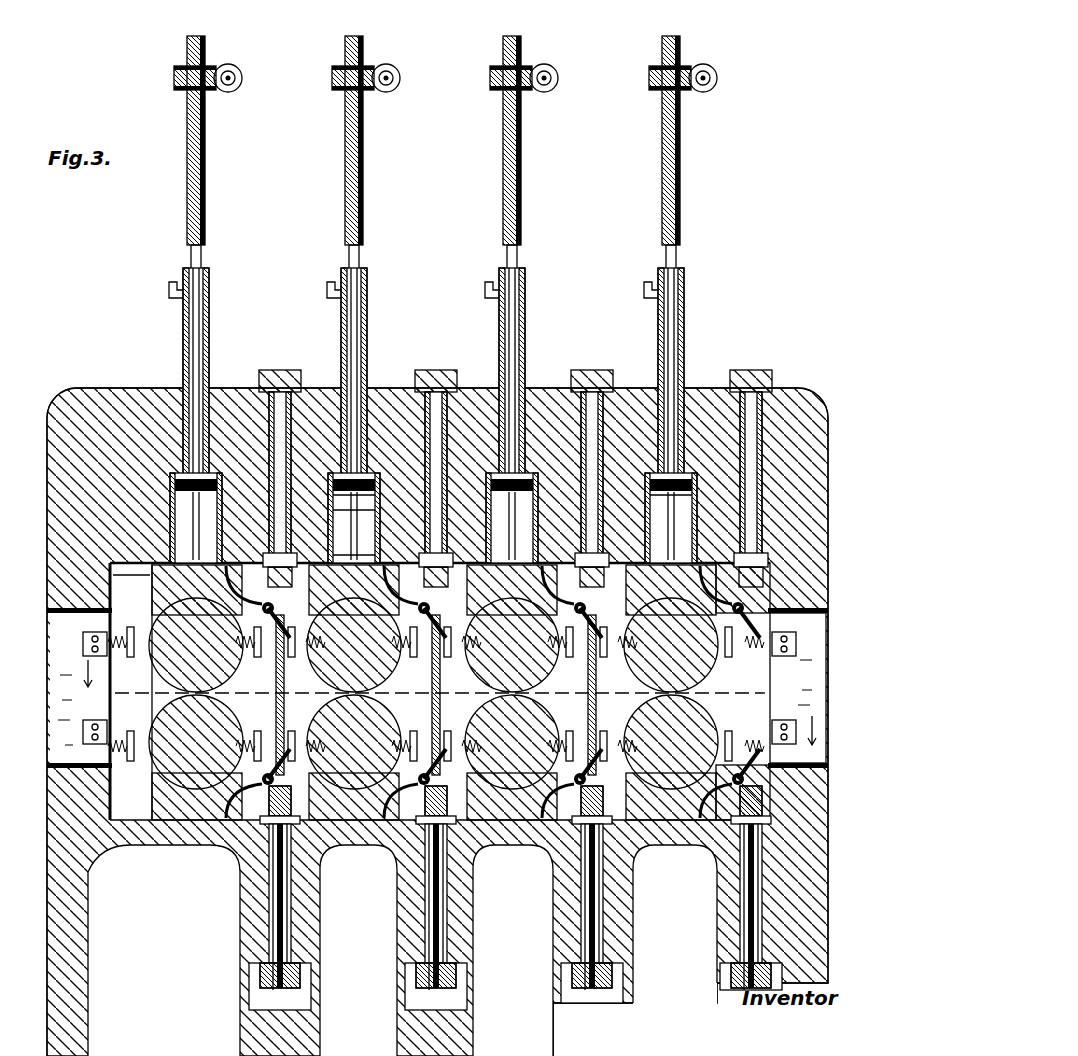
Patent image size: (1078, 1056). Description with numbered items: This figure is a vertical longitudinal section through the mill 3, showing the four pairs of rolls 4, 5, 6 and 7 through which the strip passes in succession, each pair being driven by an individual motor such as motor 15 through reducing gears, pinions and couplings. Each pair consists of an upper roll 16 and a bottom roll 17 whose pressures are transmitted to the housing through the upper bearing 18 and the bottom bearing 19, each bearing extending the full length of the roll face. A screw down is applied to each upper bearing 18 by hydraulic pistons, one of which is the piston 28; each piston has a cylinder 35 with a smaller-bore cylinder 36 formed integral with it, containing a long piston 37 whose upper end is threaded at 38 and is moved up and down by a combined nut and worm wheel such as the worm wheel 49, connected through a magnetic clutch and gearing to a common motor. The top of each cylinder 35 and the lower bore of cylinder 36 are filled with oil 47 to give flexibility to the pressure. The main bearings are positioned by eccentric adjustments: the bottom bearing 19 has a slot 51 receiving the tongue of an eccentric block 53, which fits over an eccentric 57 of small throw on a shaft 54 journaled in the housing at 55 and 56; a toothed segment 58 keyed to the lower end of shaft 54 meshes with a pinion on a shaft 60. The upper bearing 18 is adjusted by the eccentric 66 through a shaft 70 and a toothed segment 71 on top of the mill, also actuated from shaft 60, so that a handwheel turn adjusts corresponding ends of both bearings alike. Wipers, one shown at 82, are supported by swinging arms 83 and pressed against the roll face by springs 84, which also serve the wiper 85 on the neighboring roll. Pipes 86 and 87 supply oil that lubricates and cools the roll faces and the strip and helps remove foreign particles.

The mill 3 is at (105, 390).
The pair of rolls 4 is at (440, 700).
The pair of rolls 5 is at (272, 368).
The pair of rolls 6 is at (437, 688).
The pair of rolls 7 is at (680, 825).
The motor 15 is at (354, 551).
The upper roll 16 is at (165, 612).
The bottom roll 17 is at (175, 822).
The upper bearing 18 is at (131, 585).
The bottom bearing 19 is at (190, 830).
The hydraulic piston 28 is at (512, 511).
The cylinder 35 is at (433, 518).
The cylinder 36 is at (209, 372).
The long piston 37 is at (362, 262).
The threaded upper end 38 is at (206, 178).
The oil 47 is at (433, 501).
The worm wheel 49 is at (176, 74).
The slot 51 is at (240, 830).
The eccentric block 53 is at (270, 820).
The shaft 54 is at (425, 905).
The journal in housing 55 is at (262, 860).
The journal in housing 56 is at (425, 950).
The eccentric 57 is at (512, 845).
The toothed segment 58 is at (418, 980).
The shaft 60 is at (354, 522).
The eccentric adjustment 66 is at (582, 637).
The shaft 70 is at (440, 410).
The toothed segment 71 is at (418, 370).
The wiper 82 is at (503, 693).
The swinging arms 83 is at (429, 695).
The springs 84 is at (514, 695).
The wiper 85 is at (436, 669).
The oil supply pipe 86 is at (479, 589).
The oil supply pipe 87 is at (479, 788).